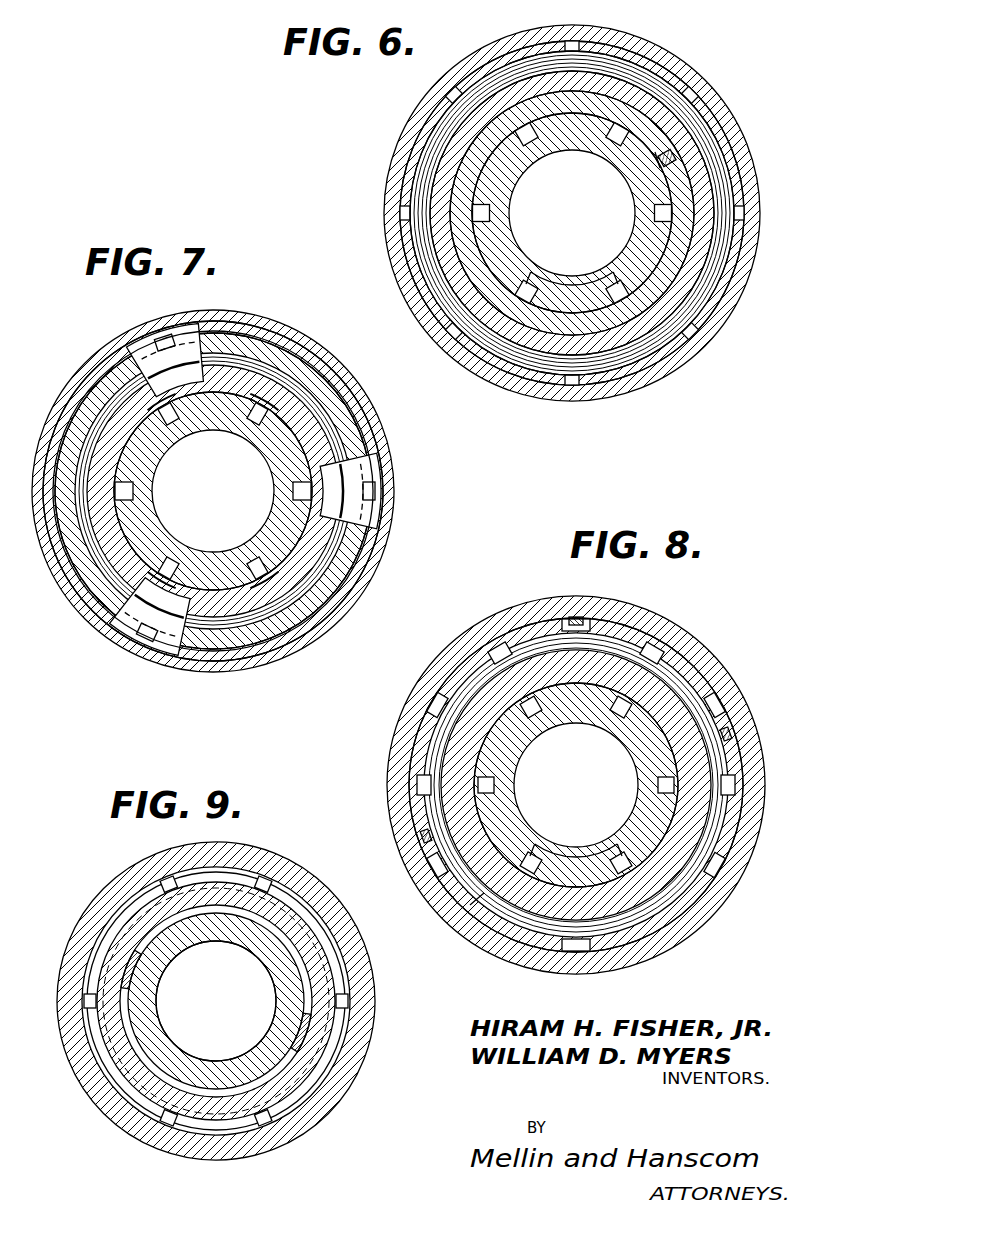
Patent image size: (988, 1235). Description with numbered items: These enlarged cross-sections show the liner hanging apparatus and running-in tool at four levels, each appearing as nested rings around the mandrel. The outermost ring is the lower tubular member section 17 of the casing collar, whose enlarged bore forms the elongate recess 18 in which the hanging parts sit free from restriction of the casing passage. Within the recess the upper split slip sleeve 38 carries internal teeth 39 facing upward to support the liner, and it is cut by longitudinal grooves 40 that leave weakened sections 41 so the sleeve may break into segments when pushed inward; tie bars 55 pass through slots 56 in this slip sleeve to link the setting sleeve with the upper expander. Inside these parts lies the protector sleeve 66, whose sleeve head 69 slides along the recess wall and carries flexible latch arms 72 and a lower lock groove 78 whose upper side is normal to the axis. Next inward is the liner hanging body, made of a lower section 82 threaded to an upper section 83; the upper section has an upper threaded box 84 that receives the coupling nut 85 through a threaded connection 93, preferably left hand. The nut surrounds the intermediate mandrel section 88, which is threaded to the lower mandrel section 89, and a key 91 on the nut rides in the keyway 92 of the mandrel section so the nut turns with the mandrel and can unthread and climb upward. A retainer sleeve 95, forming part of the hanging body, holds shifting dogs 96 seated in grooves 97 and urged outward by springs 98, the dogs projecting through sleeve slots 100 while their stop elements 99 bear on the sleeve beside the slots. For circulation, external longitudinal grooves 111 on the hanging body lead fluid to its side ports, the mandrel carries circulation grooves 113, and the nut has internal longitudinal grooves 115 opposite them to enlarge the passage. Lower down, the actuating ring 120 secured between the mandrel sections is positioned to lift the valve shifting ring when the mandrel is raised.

In FIG. 6, the lower tubular member section 17 is at (398, 190).
In FIG. 7, the lower tubular member section 17 is at (335, 627).
In FIG. 8, the lower tubular member section 17 is at (398, 792).
In FIG. 9, the lower tubular member section 17 is at (258, 860).
In FIG. 6, the elongate recess 18 is at (722, 122).
In FIG. 7, the elongate recess 18 is at (297, 642).
In FIG. 9, the elongate recess 18 is at (330, 1085).
In FIG. 8, the upper split slip sleeve 38 is at (705, 690).
In FIG. 8, the internal teeth 39 is at (475, 905).
In FIG. 8, the longitudinal grooves 40 is at (658, 648).
In FIG. 8, the weakened sections 41 is at (500, 640).
In FIG. 8, the tie bars 55 is at (595, 620).
In FIG. 8, the slots 56 is at (480, 712).
In FIG. 8, the protector sleeve 66 is at (470, 700).
In FIG. 6, the sleeve head 69 is at (718, 247).
In FIG. 7, the sleeve head 69 is at (60, 433).
In FIG. 6, the flexible latch arms 72 is at (665, 70).
In FIG. 7, the lower lock groove 78 is at (348, 592).
In FIG. 9, the lower section 82 is at (118, 918).
In FIG. 7, the upper section 83 is at (330, 432).
In FIG. 8, the upper section 83 is at (675, 867).
In FIG. 6, the upper threaded box 84 is at (560, 348).
In FIG. 6, the coupling nut 85 is at (480, 155).
In FIG. 6, the intermediate mandrel section 88 is at (642, 228).
In FIG. 7, the intermediate mandrel section 88 is at (285, 450).
In FIG. 8, the intermediate mandrel section 88 is at (640, 760).
In FIG. 9, the intermediate mandrel section 88 is at (320, 940).
In FIG. 9, the lower mandrel section 89 is at (262, 948).
In FIG. 6, the key 91 is at (672, 162).
In FIG. 6, the keyway 92 is at (658, 163).
In FIG. 6, the threaded connection 93 is at (445, 250).
In FIG. 6, the retainer sleeve 95 is at (615, 355).
In FIG. 7, the retainer sleeve 95 is at (270, 372).
In FIG. 7, the shifting dogs 96 is at (155, 352).
In FIG. 7, the grooves 97 is at (158, 455).
In FIG. 7, the springs 98 is at (170, 435).
In FIG. 7, the stop elements 99 is at (230, 345).
In FIG. 7, the sleeve slots 100 is at (165, 340).
In FIG. 9, the longitudinal grooves 111 is at (168, 878).
In FIG. 6, the circulation grooves 113 is at (560, 275).
In FIG. 7, the circulation grooves 113 is at (262, 405).
In FIG. 8, the circulation grooves 113 is at (555, 850).
In FIG. 6, the internal longitudinal grooves 115 is at (534, 142).
In FIG. 9, the actuating ring 120 is at (295, 1030).